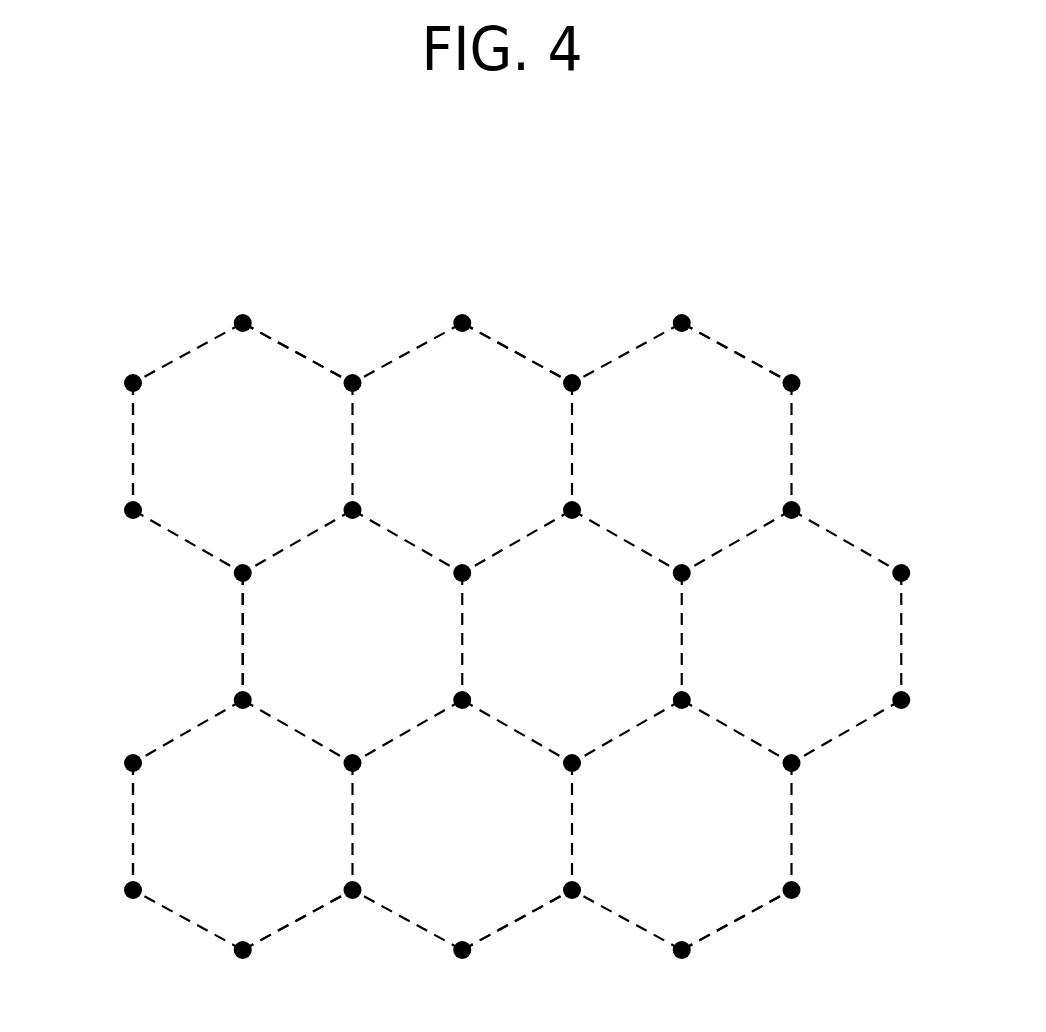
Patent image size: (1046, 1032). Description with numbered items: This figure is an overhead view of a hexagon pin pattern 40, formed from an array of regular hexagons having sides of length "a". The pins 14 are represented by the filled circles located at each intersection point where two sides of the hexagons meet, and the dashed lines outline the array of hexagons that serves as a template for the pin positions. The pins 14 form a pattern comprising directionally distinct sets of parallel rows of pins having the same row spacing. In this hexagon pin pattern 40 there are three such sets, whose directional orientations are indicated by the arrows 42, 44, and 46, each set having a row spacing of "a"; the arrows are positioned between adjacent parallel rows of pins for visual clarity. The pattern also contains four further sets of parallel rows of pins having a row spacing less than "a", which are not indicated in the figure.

The hexagon pin pattern 40 is at (452, 250).
The pin 14 is at (904, 712).
The arrow indicating first set of parallel rows of pins 42 is at (275, 378).
The arrow indicating second set of parallel rows of pins 44 is at (173, 441).
The arrow indicating third set of parallel rows of pins 46 is at (275, 900).